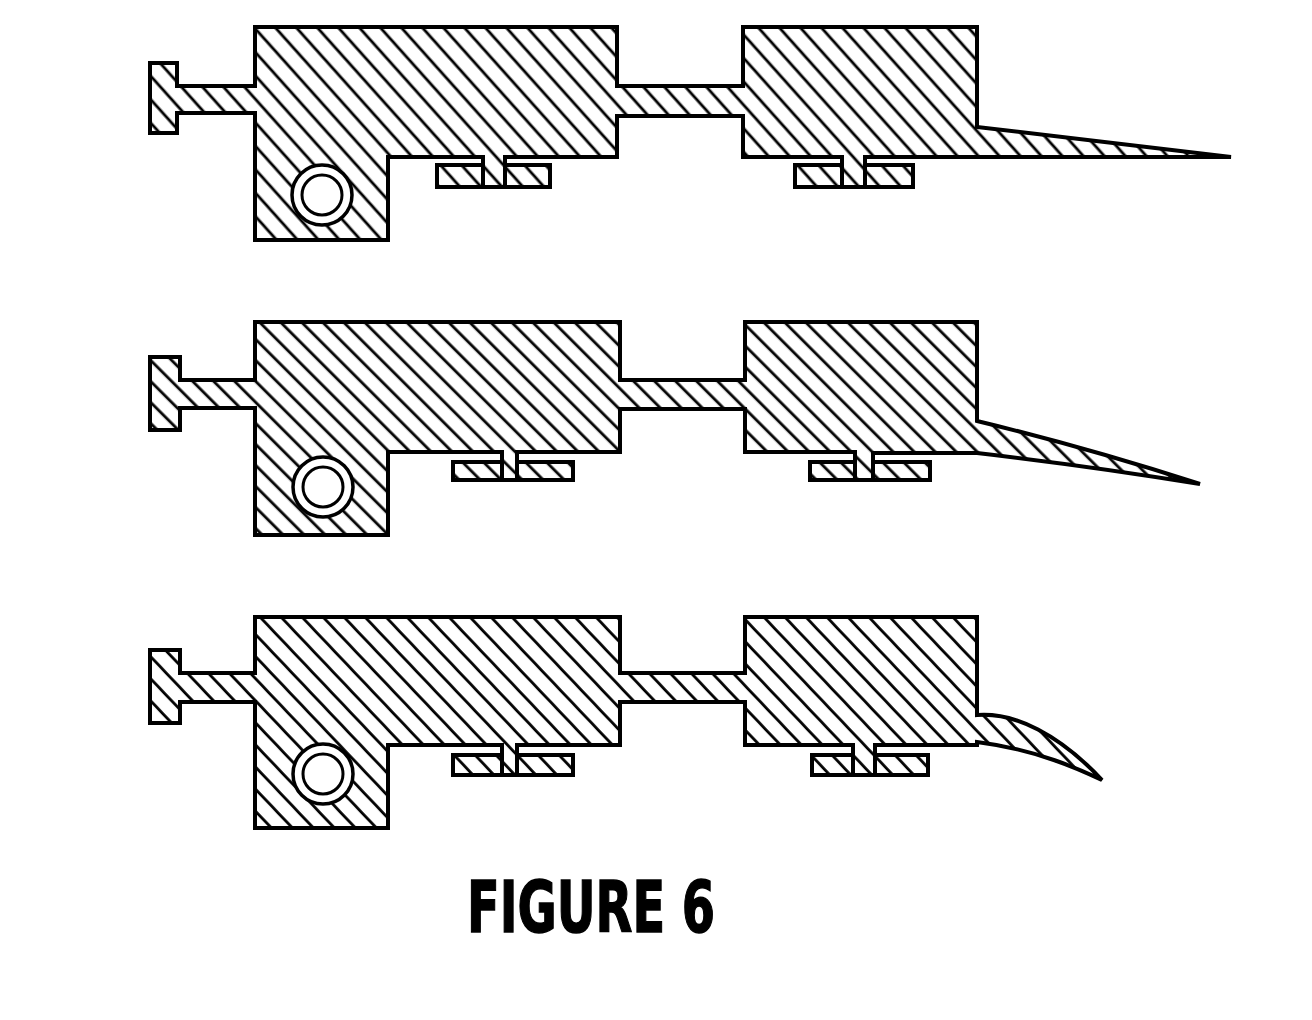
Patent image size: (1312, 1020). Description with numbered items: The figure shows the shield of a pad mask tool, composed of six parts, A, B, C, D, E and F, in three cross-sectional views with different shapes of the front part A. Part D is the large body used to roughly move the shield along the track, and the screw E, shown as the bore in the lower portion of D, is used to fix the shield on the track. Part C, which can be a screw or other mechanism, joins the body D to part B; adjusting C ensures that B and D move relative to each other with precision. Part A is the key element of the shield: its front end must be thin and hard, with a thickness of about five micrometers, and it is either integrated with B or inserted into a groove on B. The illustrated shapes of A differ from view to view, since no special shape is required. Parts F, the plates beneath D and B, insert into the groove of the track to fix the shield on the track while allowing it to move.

The shield front part A is at (1104, 150).
The shield part holding A B is at (860, 107).
The adjusting screw C is at (460, 99).
The shield coarse-moving part D is at (436, 133).
The fixing screw E is at (295, 198).
The track-engaging part F is at (675, 202).